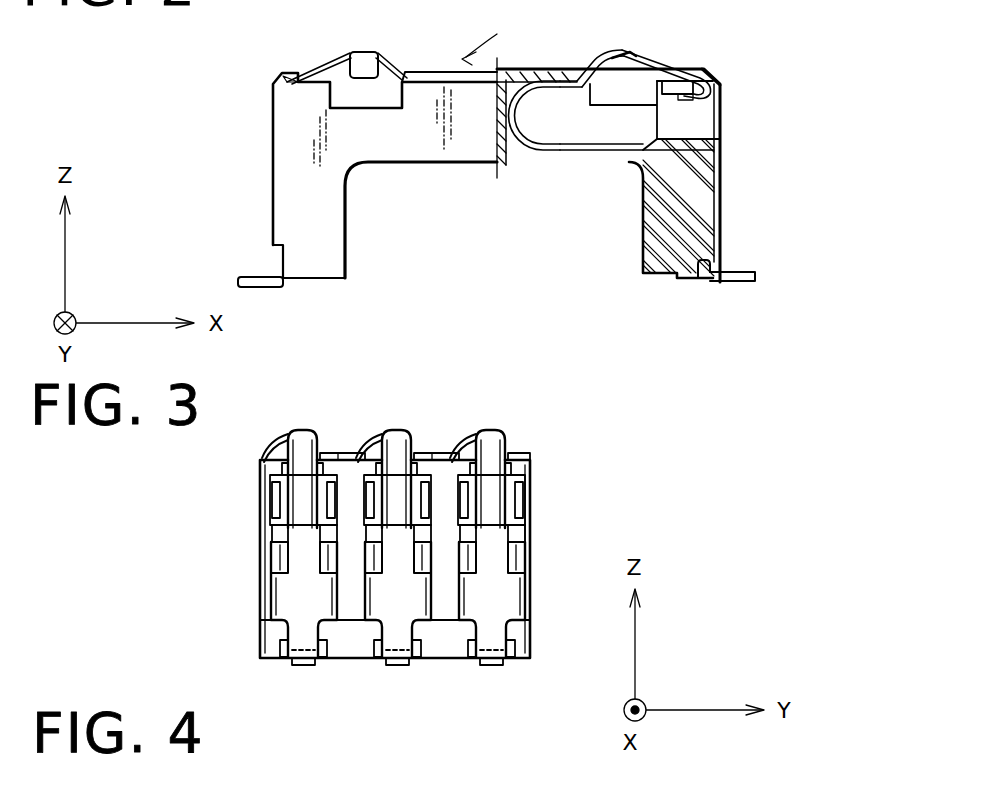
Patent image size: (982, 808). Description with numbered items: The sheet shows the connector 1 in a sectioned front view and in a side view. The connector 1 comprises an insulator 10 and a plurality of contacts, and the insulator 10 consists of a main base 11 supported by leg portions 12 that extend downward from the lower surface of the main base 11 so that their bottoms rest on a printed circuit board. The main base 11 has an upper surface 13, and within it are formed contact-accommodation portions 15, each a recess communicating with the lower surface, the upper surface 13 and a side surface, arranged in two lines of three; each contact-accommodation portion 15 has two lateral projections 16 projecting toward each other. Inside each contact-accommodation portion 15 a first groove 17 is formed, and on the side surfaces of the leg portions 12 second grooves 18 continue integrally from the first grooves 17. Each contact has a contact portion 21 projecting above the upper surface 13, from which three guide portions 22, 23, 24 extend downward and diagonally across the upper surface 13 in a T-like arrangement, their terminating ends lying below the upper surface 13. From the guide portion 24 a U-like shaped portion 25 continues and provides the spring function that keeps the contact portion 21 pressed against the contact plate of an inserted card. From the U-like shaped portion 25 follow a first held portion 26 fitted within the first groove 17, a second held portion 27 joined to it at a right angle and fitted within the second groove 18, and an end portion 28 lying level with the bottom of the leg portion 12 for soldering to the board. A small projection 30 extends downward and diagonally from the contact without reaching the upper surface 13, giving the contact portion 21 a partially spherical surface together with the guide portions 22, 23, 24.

In FIG. 3, the connector 1 is at (488, 34).
In FIG. 4, the insulator 10 is at (530, 473).
In FIG. 3, the main base 11 is at (378, 165).
In FIG. 3, the leg portions 12 is at (290, 198).
In FIG. 3, the upper surface 13 is at (436, 72).
In FIG. 3, the contact-accommodation portion 15 is at (590, 150).
In FIG. 3, the lateral projections 16 is at (722, 86).
In FIG. 4, the first groove 17 is at (503, 543).
In FIG. 4, the second groove 18 is at (503, 567).
In FIG. 3, the contact portion 21 is at (364, 52).
In FIG. 3, the guide portion 22 is at (666, 62).
In FIG. 4, the guide portion 23 is at (265, 452).
In FIG. 3, the guide portion 24 is at (590, 64).
In FIG. 3, the U-like shaped portion 25 is at (527, 165).
In FIG. 3, the first held portion 26 is at (722, 142).
In FIG. 3, the second held portion 27 is at (722, 200).
In FIG. 4, the second held portion 27 is at (502, 600).
In FIG. 3, the end portion 28 is at (728, 282).
In FIG. 4, the end portion 28 is at (481, 666).
In FIG. 3, the small projection 30 is at (694, 98).
In FIG. 4, the small projection 30 is at (325, 446).